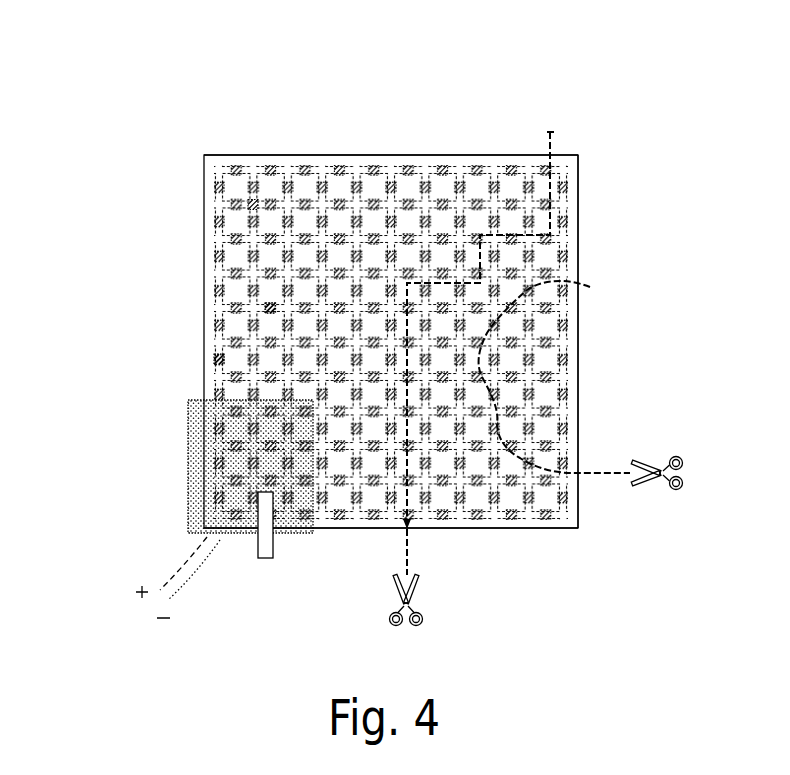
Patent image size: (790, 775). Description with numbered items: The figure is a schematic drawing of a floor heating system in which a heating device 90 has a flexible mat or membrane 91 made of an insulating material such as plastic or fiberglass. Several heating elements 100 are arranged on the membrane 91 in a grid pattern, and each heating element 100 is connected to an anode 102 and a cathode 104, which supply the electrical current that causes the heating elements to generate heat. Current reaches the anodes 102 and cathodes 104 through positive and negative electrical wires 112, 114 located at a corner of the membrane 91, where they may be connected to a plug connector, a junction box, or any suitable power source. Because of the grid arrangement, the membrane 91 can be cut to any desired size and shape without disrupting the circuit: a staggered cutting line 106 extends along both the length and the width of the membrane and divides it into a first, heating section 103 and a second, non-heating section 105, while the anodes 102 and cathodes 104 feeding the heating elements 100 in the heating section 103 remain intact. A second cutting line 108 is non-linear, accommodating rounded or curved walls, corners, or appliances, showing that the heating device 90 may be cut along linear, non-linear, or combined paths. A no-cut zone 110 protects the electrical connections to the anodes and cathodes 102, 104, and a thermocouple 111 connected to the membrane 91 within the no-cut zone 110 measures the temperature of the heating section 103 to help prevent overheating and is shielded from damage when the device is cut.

The heating device 90 is at (175, 163).
The membrane 91 is at (238, 358).
The heating element 100 is at (270, 303).
The anode 102 is at (367, 170).
The first, heating section 103 is at (273, 152).
The cathode 104 is at (497, 520).
The second, non-heating section 105 is at (585, 390).
The cutting line 106 is at (551, 140).
The second cutting line 108 is at (590, 285).
The no-cut zone 110 is at (203, 472).
The thermocouple 111 is at (270, 558).
The positive electrical wire 112 is at (180, 572).
The negative electrical wire 114 is at (200, 580).